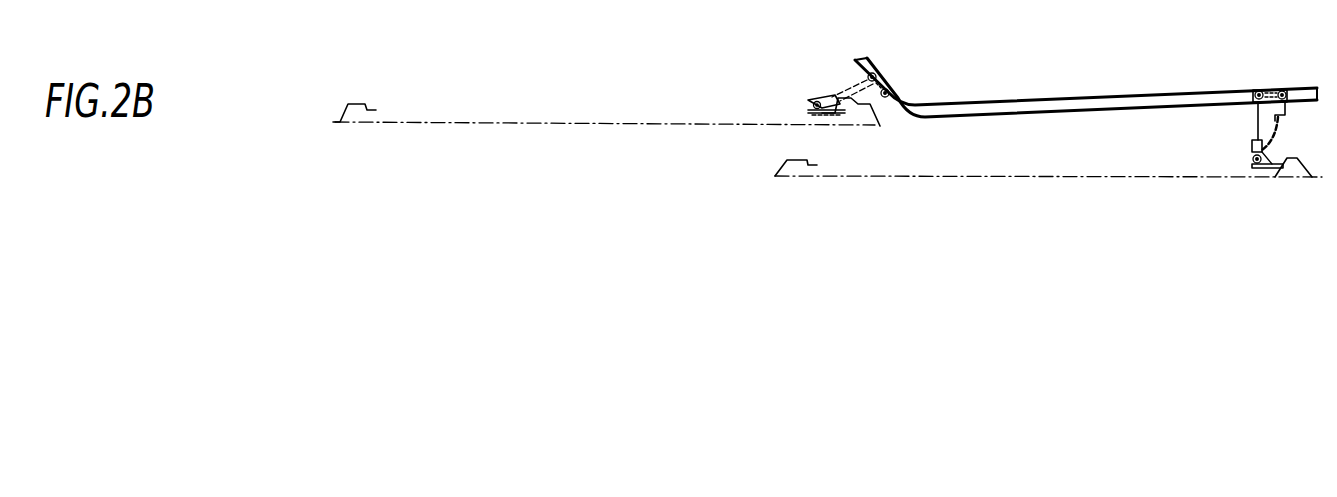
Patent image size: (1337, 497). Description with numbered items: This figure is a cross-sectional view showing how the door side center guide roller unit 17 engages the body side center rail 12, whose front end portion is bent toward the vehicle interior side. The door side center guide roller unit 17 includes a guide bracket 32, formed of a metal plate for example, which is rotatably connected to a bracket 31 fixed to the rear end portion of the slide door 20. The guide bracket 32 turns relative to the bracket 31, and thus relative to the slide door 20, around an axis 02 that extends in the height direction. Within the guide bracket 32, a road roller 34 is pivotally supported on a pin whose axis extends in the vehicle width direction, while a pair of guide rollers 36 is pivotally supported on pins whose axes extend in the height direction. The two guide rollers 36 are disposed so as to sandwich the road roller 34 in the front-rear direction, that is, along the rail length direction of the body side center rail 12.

The body side center rail 12 is at (1062, 99).
The door side center guide roller unit 17 is at (822, 92).
The slide door 20 is at (968, 178).
The bracket 31 is at (805, 113).
The guide bracket 32 is at (822, 90).
The road roller 34 is at (887, 80).
The guide roller 36 is at (870, 72).
The axis 02 is at (1252, 160).